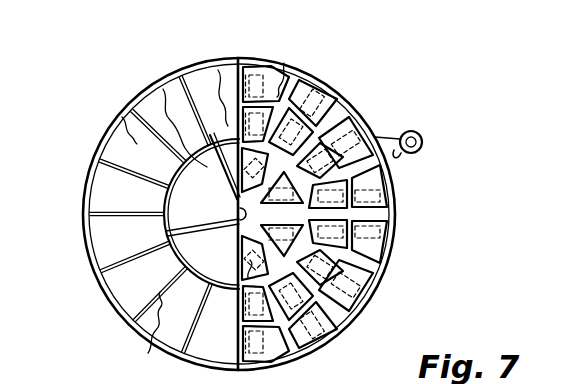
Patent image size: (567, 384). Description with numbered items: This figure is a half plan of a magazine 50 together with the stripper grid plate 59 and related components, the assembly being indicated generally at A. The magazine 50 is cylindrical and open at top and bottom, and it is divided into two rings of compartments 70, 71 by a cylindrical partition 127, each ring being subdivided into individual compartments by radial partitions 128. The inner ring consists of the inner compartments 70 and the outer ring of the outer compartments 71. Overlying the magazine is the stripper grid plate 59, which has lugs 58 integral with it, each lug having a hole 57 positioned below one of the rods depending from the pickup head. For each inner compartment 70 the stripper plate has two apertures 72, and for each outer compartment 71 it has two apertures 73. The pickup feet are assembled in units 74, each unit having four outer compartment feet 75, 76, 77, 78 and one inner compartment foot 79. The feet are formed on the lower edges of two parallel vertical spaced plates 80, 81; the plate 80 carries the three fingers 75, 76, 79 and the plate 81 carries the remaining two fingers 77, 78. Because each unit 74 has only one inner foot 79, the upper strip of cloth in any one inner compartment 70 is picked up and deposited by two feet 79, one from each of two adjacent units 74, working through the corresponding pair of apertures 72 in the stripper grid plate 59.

The assembly A is at (98, 145).
The magazine 50 is at (109, 307).
The holes 57 is at (422, 138).
The lugs 58 is at (402, 158).
The stripper grid plate 59 is at (378, 291).
The inner compartments 70 is at (163, 89).
The outer compartments 71 is at (123, 116).
The stripper plate apertures 72 is at (250, 260).
The stripper plate apertures 73 is at (284, 63).
The units 74 is at (355, 105).
The outer compartment foot 75 is at (307, 82).
The outer compartment foot 76 is at (334, 81).
The outer compartment foot 77 is at (383, 128).
The outer compartment foot 78 is at (367, 111).
The inner compartment foot 79 is at (224, 190).
The vertical plate 80 is at (388, 204).
The vertical plate 81 is at (389, 224).
The cylindrical partition 127 is at (217, 68).
The radial partitions 128 is at (147, 333).